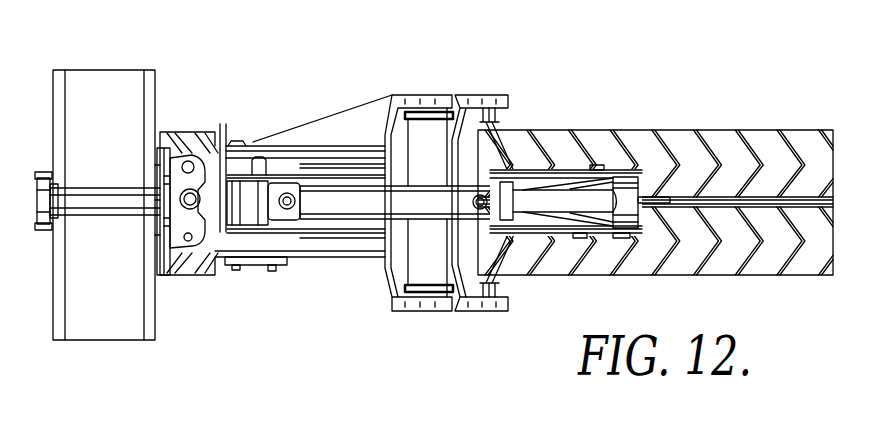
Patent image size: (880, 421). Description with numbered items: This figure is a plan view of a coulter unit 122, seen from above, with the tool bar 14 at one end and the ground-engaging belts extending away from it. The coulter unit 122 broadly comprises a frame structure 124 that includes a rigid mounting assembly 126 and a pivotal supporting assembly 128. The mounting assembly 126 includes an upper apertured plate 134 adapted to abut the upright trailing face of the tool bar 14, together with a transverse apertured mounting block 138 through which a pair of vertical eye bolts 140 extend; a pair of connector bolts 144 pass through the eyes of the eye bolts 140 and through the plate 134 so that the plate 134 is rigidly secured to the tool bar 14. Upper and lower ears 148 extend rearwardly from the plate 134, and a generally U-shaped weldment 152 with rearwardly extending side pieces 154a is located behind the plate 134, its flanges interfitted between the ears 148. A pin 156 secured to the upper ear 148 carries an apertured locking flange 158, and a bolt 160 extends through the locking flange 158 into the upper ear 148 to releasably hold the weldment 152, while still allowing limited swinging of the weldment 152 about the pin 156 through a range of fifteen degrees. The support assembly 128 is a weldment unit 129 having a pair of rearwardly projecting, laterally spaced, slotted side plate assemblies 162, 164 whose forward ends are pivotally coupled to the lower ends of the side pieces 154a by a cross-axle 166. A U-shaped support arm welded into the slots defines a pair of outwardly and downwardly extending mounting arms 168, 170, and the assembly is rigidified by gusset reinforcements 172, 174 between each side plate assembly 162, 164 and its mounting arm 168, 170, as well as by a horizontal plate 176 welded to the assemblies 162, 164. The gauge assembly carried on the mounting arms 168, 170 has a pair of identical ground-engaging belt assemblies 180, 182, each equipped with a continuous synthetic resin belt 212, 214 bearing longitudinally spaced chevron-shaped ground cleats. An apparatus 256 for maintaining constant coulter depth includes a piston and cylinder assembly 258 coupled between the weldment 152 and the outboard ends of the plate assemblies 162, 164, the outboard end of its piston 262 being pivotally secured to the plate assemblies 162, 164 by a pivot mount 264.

The tool bar 14 is at (88, 83).
The coulter unit 122 is at (658, 57).
The frame structure 124 is at (341, 334).
The mounting assembly 126 is at (172, 80).
The supporting assembly 128 is at (503, 80).
The weldment unit 129 is at (603, 170).
The upper apertured plate 134 is at (158, 165).
The transverse apertured mounting block 138 is at (42, 174).
The vertical eye bolts 140 is at (52, 188).
The connector bolts 144 is at (77, 216).
The upper and lower ears 148 is at (188, 244).
The U-shaped weldment 152 is at (221, 158).
The side pieces 154a is at (288, 214).
The pin 156 is at (186, 210).
The locking flange 158 is at (182, 182).
The bolt 160 is at (190, 162).
The side plate assembly 162 is at (352, 170).
The side plate assembly 164 is at (298, 258).
The cross-axle 166 is at (233, 265).
The mounting arm 168 is at (427, 95).
The mounting arm 170 is at (491, 312).
The gusset reinforcement 172 is at (368, 118).
The gusset reinforcement 174 is at (250, 260).
The horizontal plate 176 is at (300, 135).
The belt assembly 180 is at (783, 120).
The belt assembly 182 is at (823, 300).
The ground-engaging belt 212 is at (757, 279).
The ground-engaging belt 214 is at (728, 128).
The apparatus 256 is at (302, 160).
The piston and cylinder assembly 258 is at (370, 207).
The piston 262 is at (528, 196).
The pivot mount 264 is at (622, 228).